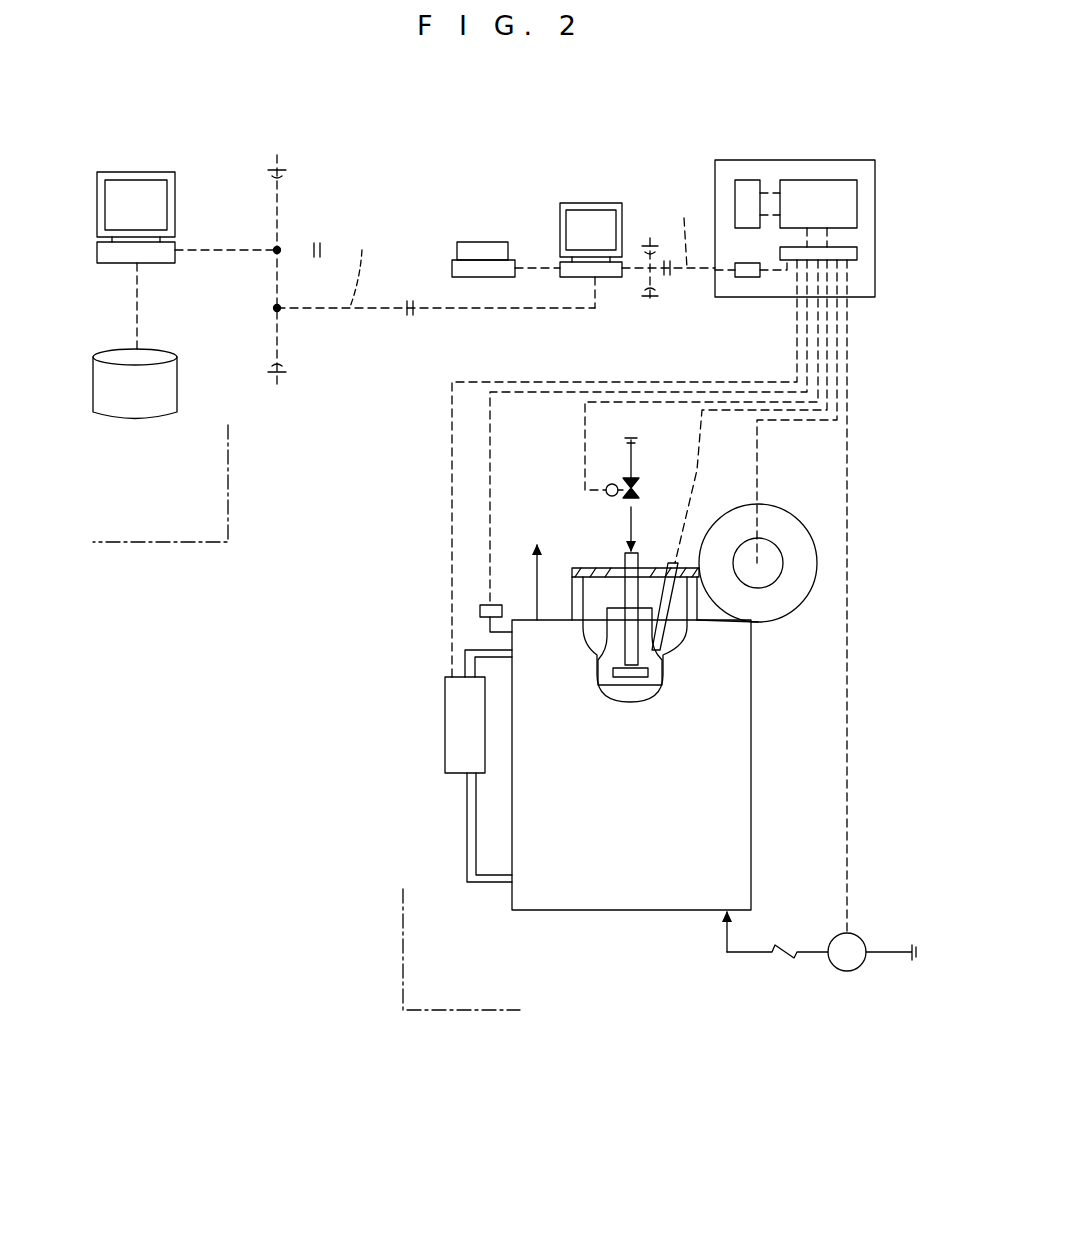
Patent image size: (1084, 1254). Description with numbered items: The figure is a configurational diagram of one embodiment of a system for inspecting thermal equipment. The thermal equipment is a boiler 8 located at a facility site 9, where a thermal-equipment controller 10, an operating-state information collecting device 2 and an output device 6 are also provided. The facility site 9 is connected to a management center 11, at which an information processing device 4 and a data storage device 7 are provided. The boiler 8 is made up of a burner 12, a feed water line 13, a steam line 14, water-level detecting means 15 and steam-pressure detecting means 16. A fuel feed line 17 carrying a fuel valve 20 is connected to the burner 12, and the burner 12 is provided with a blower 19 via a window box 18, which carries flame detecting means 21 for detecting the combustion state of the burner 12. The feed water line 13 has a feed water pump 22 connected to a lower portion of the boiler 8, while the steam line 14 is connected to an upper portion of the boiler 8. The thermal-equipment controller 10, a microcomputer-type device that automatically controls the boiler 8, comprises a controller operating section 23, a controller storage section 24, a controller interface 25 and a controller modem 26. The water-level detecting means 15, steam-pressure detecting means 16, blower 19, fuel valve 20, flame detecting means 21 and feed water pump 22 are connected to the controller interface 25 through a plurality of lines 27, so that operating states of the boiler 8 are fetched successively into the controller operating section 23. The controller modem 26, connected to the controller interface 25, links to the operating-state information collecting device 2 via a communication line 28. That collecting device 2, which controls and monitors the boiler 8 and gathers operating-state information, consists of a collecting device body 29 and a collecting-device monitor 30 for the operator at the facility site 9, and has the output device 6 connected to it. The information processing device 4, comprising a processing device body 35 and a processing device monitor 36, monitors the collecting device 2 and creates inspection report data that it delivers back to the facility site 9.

The operating-state information collecting device 2 is at (593, 193).
The information processing device 4 is at (147, 158).
The output device 6 is at (481, 243).
The data storage device 7 is at (180, 387).
The boiler 8 is at (437, 495).
The facility site 9 is at (426, 1012).
The thermal-equipment controller 10 is at (815, 145).
The management center 11 is at (178, 545).
The burner 12 is at (620, 592).
The feed water line 13 is at (884, 952).
The steam line 14 is at (535, 580).
The water-level detecting means 15 is at (445, 680).
The steam-pressure detecting means 16 is at (482, 604).
The fuel feed line 17 is at (633, 460).
The window box 18 is at (600, 575).
The blower 19 is at (790, 515).
The fuel valve 20 is at (612, 484).
The flame detecting means 21 is at (672, 568).
The feed water pump 22 is at (849, 972).
The controller operating section 23 is at (848, 182).
The controller storage section 24 is at (748, 183).
The controller interface 25 is at (857, 258).
The controller modem 26 is at (748, 277).
The lines 27 is at (726, 400).
The communication line 28 is at (668, 228).
The collecting device body 29 is at (610, 280).
The collecting-device monitor 30 is at (573, 215).
The processing device body 35 is at (112, 264).
The processing device monitor 36 is at (118, 190).